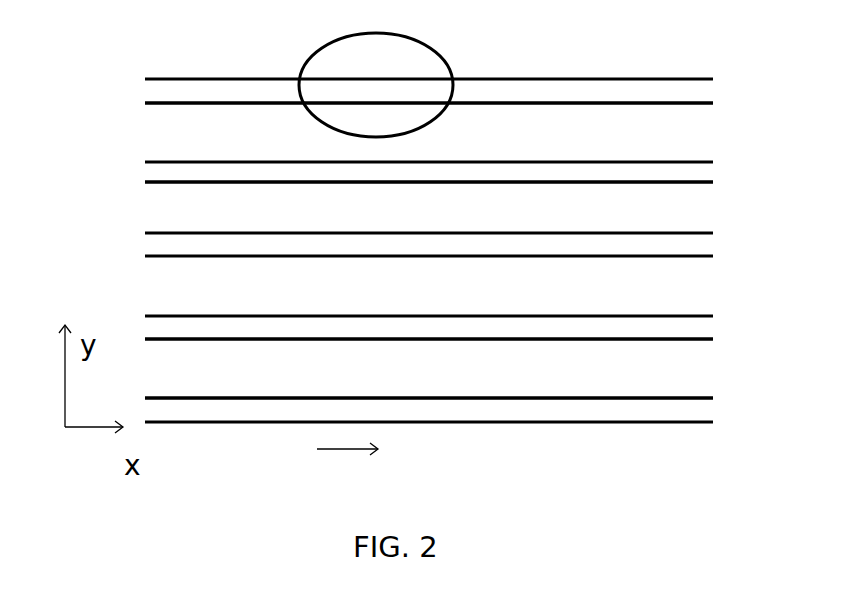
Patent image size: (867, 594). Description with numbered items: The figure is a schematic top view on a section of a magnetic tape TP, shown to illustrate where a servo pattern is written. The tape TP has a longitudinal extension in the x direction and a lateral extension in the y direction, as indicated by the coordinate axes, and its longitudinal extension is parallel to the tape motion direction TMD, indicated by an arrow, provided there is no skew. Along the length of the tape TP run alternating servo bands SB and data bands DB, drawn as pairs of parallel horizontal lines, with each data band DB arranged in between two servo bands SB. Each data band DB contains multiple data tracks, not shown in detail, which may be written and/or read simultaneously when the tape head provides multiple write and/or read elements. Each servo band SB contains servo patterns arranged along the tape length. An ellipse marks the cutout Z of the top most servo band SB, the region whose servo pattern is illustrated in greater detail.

The tape TP is at (100, 20).
The cutout Z is at (290, 0).
The servo bands SB is at (411, 398).
The data bands DB is at (619, 375).
The tape motion direction TMD is at (382, 471).